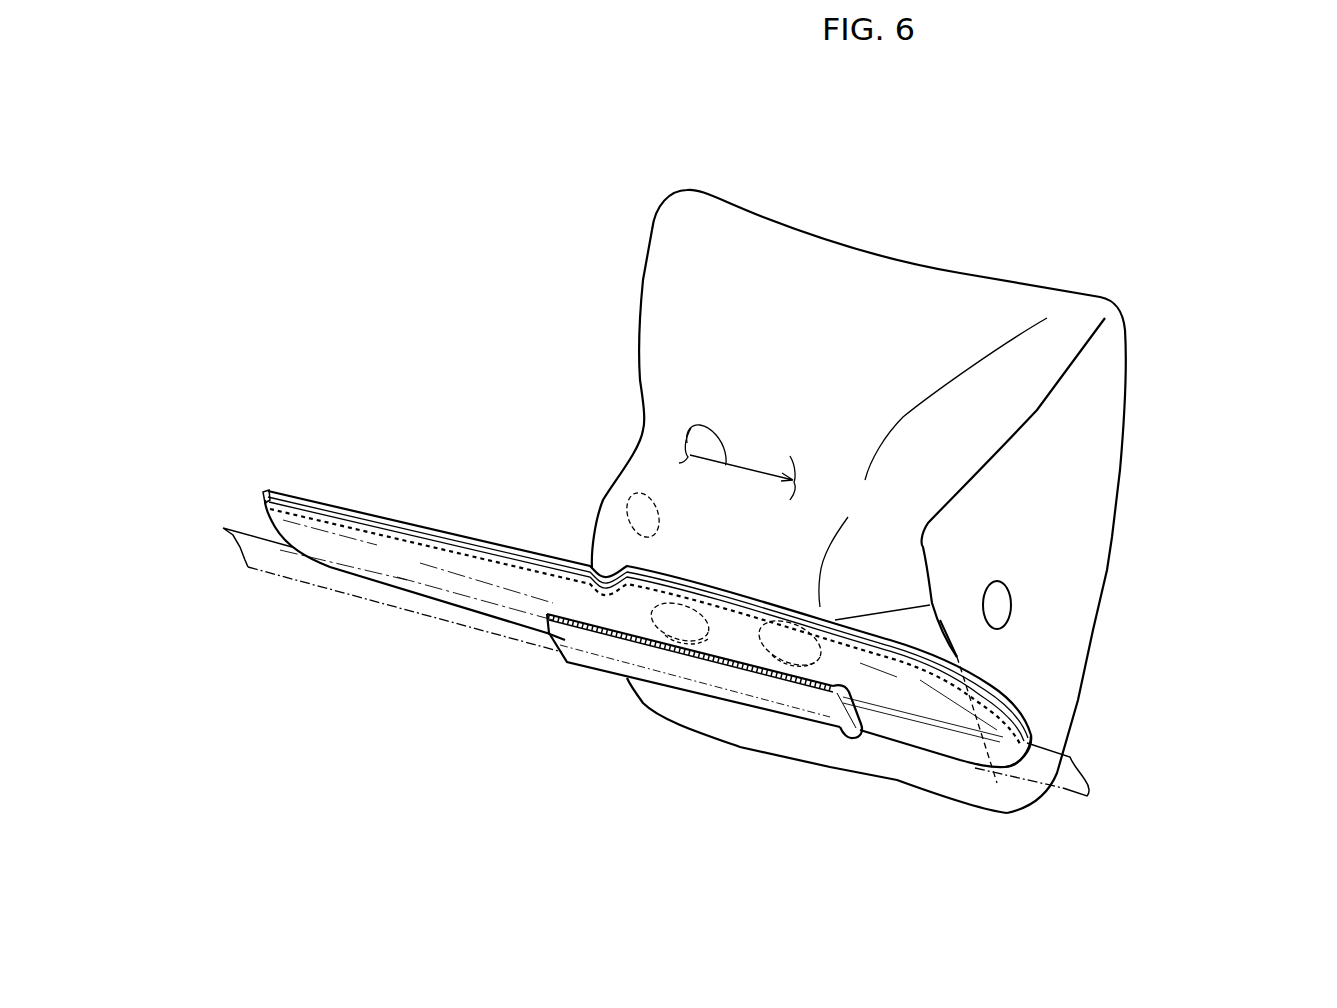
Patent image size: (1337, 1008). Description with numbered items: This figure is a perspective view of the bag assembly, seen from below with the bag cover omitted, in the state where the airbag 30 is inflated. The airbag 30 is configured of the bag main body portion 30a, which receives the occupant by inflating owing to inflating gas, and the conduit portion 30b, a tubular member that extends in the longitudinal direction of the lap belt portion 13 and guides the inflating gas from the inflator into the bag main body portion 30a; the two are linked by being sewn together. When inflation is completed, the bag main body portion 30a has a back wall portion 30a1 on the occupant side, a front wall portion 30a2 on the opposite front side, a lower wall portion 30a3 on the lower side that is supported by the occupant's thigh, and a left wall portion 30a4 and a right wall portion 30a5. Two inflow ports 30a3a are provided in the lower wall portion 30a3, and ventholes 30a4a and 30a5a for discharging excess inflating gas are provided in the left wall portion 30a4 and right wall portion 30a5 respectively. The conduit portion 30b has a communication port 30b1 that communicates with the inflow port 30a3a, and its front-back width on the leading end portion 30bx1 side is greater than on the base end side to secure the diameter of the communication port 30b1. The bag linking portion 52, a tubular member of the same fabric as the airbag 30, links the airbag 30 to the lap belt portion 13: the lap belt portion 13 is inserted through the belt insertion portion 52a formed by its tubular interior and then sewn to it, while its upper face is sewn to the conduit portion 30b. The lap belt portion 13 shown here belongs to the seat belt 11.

The airbag 30 is at (779, 506).
The bag main body portion 30a is at (890, 253).
The back wall portion 30a1 is at (715, 297).
The front wall portion 30a2 is at (1134, 410).
The lower wall portion 30a3 is at (877, 753).
The inflow port 30a3a is at (680, 637).
The left wall portion 30a4 is at (633, 378).
The venthole 30a4a is at (630, 507).
The right wall portion 30a5 is at (1077, 565).
The venthole 30a5a is at (1013, 605).
The conduit portion 30b is at (345, 503).
The communication port 30b1 is at (780, 613).
The leading end portion 30bx1 is at (1027, 742).
The bag linking portion 52 is at (630, 680).
The belt insertion portion 52a is at (833, 732).
The lap belt portion 13 is at (1063, 785).
The seat frame 11 is at (676, 719).